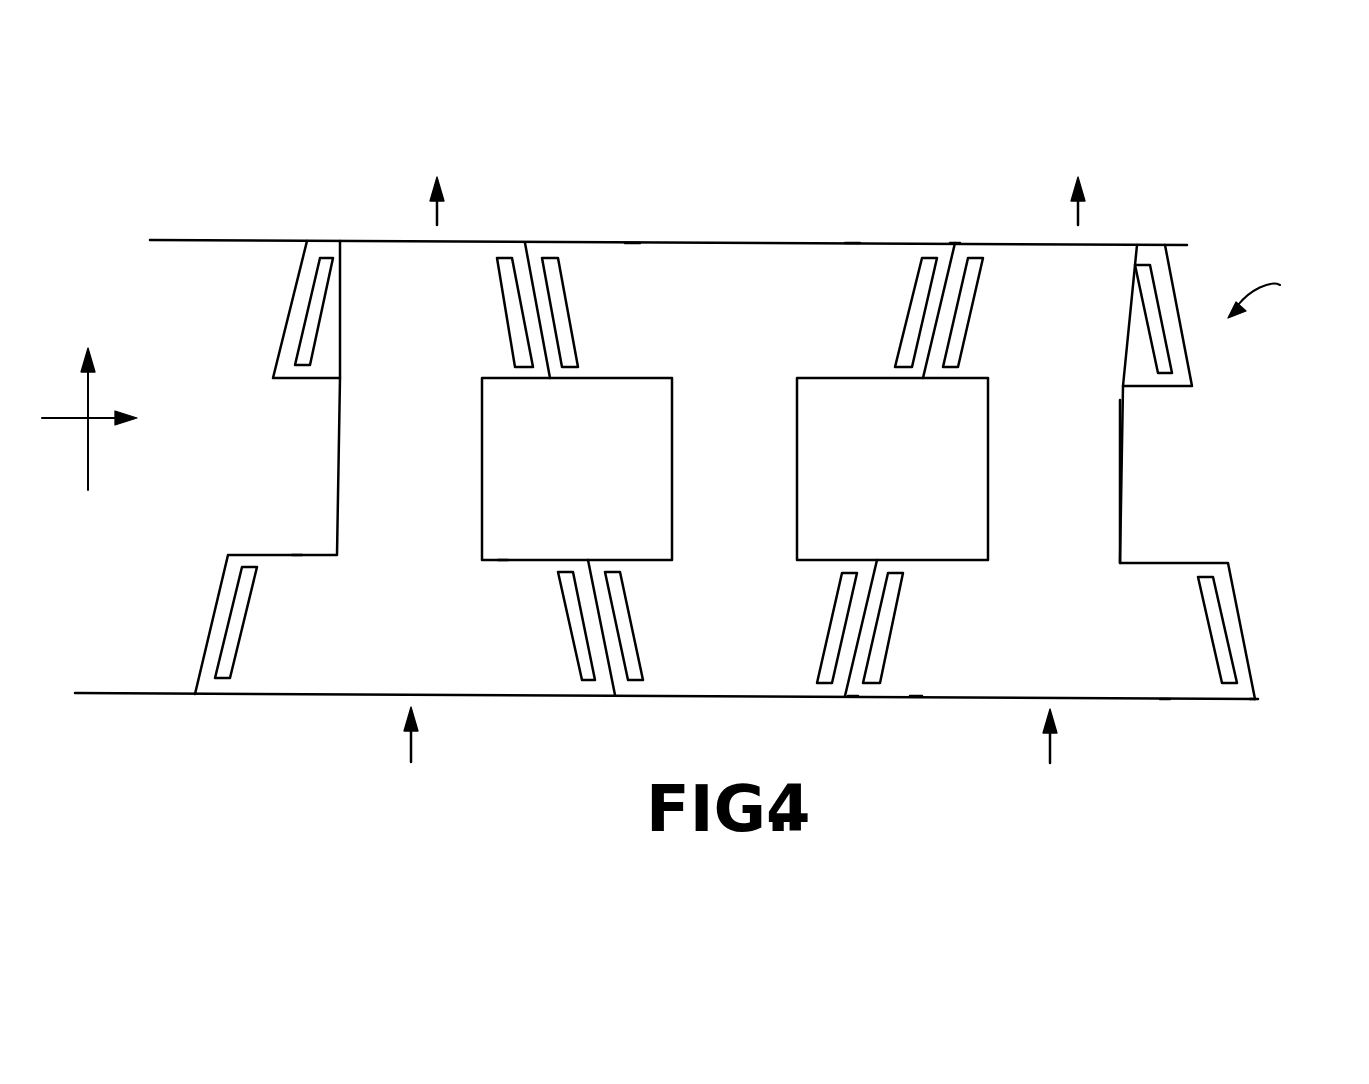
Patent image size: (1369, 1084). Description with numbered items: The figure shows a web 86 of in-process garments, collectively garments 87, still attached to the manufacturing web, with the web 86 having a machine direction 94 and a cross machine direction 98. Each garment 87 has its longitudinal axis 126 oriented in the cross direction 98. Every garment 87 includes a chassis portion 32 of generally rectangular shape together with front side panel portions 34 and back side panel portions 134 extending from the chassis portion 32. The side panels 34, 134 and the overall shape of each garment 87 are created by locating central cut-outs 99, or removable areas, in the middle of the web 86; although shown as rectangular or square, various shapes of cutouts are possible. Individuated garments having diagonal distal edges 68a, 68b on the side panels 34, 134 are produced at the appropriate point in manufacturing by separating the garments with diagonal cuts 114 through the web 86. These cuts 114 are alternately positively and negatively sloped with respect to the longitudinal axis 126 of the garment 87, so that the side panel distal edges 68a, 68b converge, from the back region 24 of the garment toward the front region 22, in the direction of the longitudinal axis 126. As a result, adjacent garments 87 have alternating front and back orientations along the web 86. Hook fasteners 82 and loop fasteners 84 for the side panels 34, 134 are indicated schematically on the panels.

The front region 22 is at (445, 291).
The back region 24 is at (713, 243).
The chassis portion 32 is at (1098, 538).
The front side panel portions 34 is at (352, 290).
The diagonal distal edge 68a is at (292, 305).
The diagonal distal edge 68b is at (212, 602).
The hook fasteners 82 is at (320, 327).
The loop fasteners 84 is at (572, 322).
The web 86 is at (1278, 292).
The in-process garments 87 is at (440, 473).
The machine direction 94 is at (50, 418).
The cross machine direction 98 is at (88, 455).
The central cut-outs 99 is at (650, 473).
The diagonal cuts 114 is at (955, 243).
The longitudinal axis 126 is at (437, 216).
The back side panel portions 134 is at (630, 277).